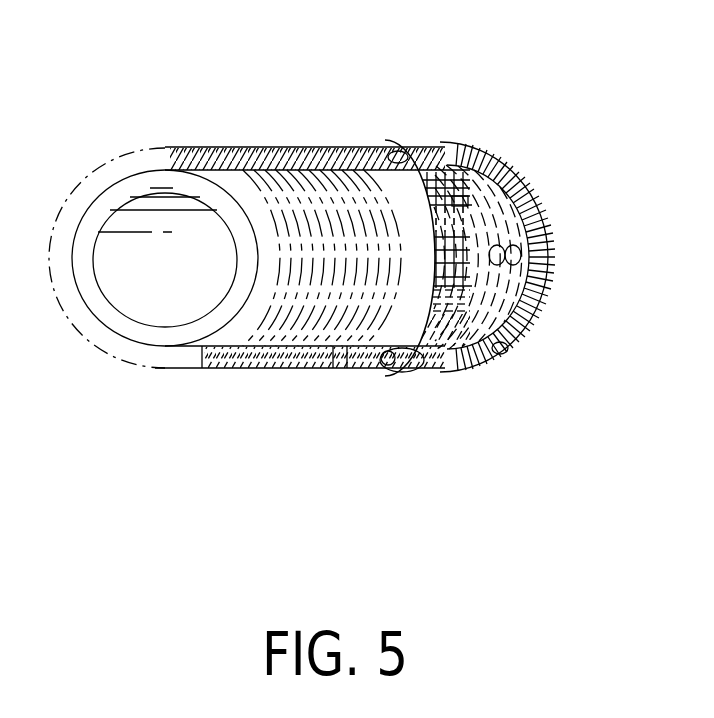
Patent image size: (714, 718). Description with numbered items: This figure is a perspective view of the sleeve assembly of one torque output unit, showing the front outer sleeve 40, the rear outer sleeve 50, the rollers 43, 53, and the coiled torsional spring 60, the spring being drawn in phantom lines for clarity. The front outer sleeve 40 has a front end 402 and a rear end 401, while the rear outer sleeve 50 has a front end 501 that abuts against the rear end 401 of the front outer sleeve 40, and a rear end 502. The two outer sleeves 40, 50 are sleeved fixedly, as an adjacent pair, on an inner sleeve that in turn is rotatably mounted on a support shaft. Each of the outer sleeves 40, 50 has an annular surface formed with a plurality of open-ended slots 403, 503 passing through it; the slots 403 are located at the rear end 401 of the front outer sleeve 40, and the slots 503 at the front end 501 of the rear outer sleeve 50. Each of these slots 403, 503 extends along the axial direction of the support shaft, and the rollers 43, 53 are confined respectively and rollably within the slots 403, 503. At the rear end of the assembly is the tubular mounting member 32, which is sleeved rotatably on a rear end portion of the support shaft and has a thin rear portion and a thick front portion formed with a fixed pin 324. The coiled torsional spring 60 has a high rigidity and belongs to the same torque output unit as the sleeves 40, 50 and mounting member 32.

The coiled torsional spring 60 is at (288, 125).
The front outer sleeve 40 is at (200, 370).
The front end 402 is at (138, 330).
The rollers 43 is at (330, 340).
The open-ended slots 403 is at (340, 347).
The rear end 401 is at (393, 345).
The rear outer sleeve 50 is at (456, 357).
The front end 501 is at (386, 145).
The open-ended slots 503 is at (456, 195).
The rear end 502 is at (497, 283).
The rollers 53 is at (500, 350).
The tubular mounting member 32 is at (520, 234).
The fixed pin 324 is at (515, 170).